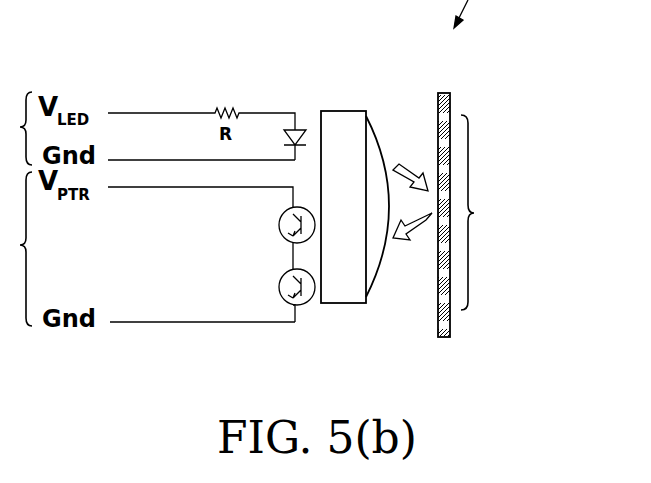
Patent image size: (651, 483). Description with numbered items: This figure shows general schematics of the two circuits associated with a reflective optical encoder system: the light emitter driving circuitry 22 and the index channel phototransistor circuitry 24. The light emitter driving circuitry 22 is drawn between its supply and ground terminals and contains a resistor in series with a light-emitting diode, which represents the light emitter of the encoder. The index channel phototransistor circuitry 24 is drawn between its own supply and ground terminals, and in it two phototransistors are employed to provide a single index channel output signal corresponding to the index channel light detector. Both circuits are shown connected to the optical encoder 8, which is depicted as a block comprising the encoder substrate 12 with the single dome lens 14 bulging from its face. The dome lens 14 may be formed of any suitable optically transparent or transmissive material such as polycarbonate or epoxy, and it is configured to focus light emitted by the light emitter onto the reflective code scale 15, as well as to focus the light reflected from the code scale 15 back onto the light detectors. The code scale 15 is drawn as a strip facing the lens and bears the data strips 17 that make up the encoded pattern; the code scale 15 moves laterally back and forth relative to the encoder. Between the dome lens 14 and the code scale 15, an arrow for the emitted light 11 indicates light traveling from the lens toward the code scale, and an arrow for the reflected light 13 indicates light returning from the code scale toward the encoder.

The optical encoder 8 is at (336, 314).
The emitted light 11 is at (414, 174).
The encoder substrate 12 is at (343, 110).
The reflected light 13 is at (416, 236).
The dome lens 14 is at (379, 160).
The code scale 15 is at (440, 93).
The data strips 17 is at (480, 212).
The light emitter driving circuitry 22 is at (16, 128).
The index channel phototransistor circuitry 24 is at (16, 249).